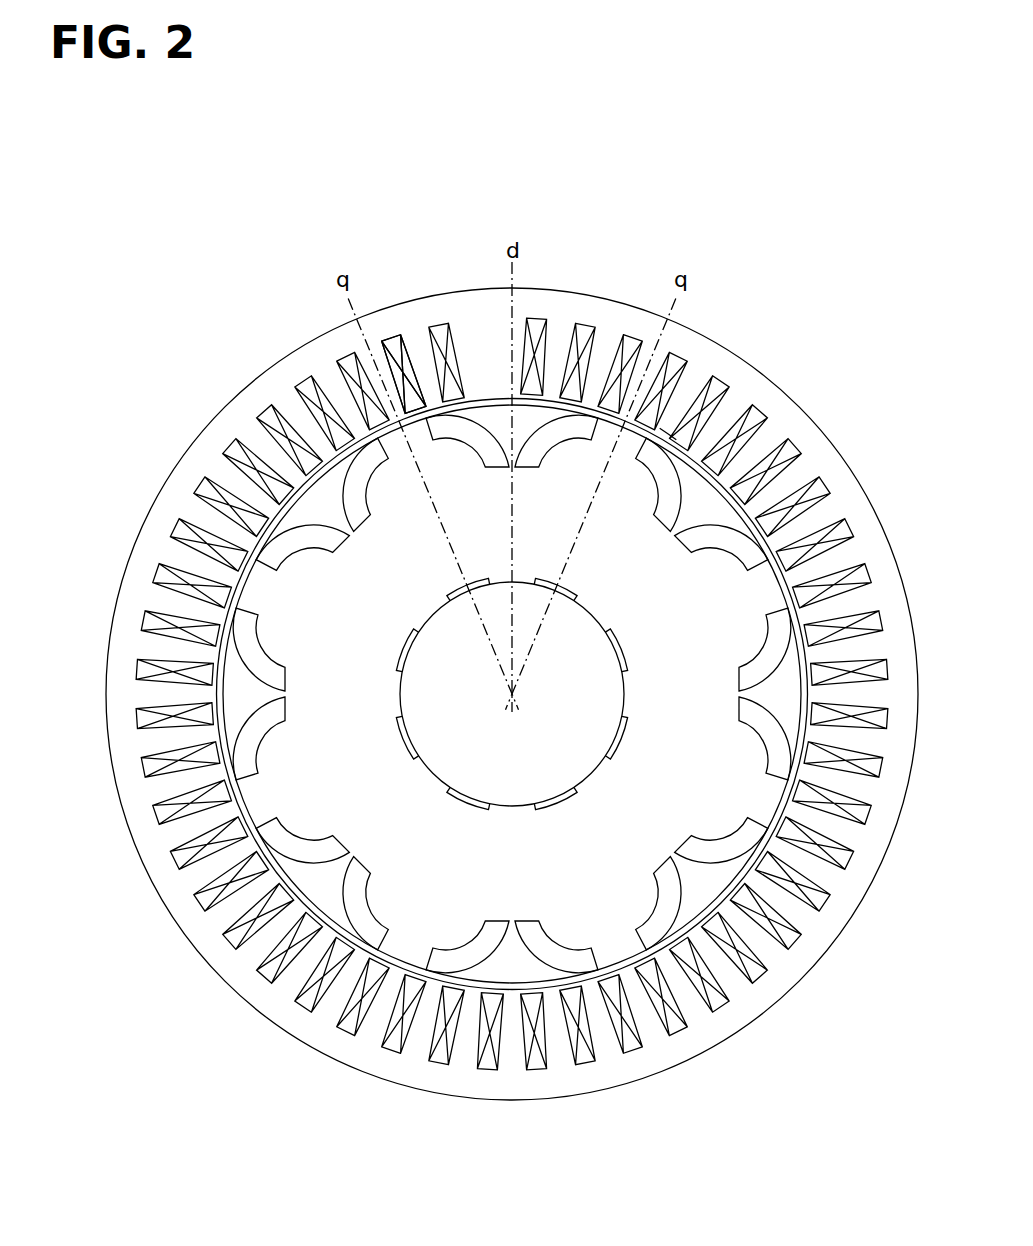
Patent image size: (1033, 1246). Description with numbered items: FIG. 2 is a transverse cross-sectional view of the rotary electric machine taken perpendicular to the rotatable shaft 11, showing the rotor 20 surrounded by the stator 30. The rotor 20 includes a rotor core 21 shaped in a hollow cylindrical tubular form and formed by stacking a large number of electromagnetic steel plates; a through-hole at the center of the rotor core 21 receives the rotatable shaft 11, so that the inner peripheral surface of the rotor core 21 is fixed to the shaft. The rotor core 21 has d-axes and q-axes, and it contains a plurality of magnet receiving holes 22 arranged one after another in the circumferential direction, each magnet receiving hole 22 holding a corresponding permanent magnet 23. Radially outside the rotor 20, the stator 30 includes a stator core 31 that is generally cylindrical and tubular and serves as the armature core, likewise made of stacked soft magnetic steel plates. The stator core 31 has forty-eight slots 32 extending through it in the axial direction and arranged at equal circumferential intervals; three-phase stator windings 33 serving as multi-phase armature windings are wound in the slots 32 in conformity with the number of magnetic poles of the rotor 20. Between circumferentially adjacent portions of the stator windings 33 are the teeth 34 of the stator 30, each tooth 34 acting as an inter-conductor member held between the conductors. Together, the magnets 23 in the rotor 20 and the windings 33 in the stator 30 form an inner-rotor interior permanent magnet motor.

The rotatable shaft 11 is at (607, 690).
The rotor 20 is at (526, 651).
The rotor core 21 is at (715, 502).
The magnet receiving hole 22 is at (372, 492).
The magnet 23 is at (472, 445).
The stator 30 is at (512, 664).
The stator core 31 is at (730, 361).
The slot 32 is at (446, 340).
The stator winding 33 is at (585, 348).
The tooth 34 is at (677, 403).